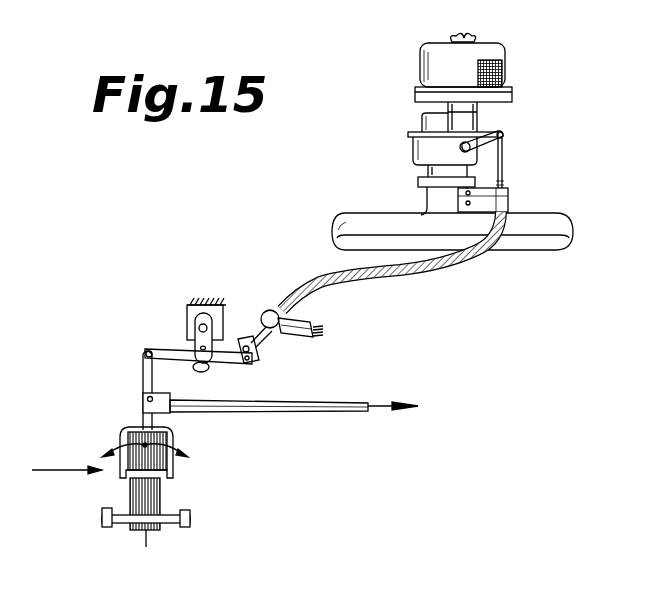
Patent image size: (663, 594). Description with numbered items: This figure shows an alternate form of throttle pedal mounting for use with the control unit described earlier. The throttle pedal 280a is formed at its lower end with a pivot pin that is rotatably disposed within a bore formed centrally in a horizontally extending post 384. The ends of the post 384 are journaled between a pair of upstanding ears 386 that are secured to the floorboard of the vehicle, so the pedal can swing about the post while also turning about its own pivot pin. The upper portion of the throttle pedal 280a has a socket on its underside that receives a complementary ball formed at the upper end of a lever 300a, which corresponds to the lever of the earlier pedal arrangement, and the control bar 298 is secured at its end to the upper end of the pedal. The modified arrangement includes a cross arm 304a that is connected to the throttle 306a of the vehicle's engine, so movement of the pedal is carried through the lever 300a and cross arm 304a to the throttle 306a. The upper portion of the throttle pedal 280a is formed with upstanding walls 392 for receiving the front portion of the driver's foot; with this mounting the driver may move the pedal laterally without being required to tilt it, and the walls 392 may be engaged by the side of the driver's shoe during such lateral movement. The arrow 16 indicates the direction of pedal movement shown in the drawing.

The direction arrow 16 is at (67, 479).
The control bar 298 is at (337, 407).
The throttle pedal 280a is at (147, 503).
The lever 300a is at (142, 377).
The cross arm 304a is at (167, 352).
The throttle 306a is at (485, 138).
The post 384 is at (122, 527).
The upstanding ears 386 is at (108, 523).
The upstanding walls 392 is at (175, 438).